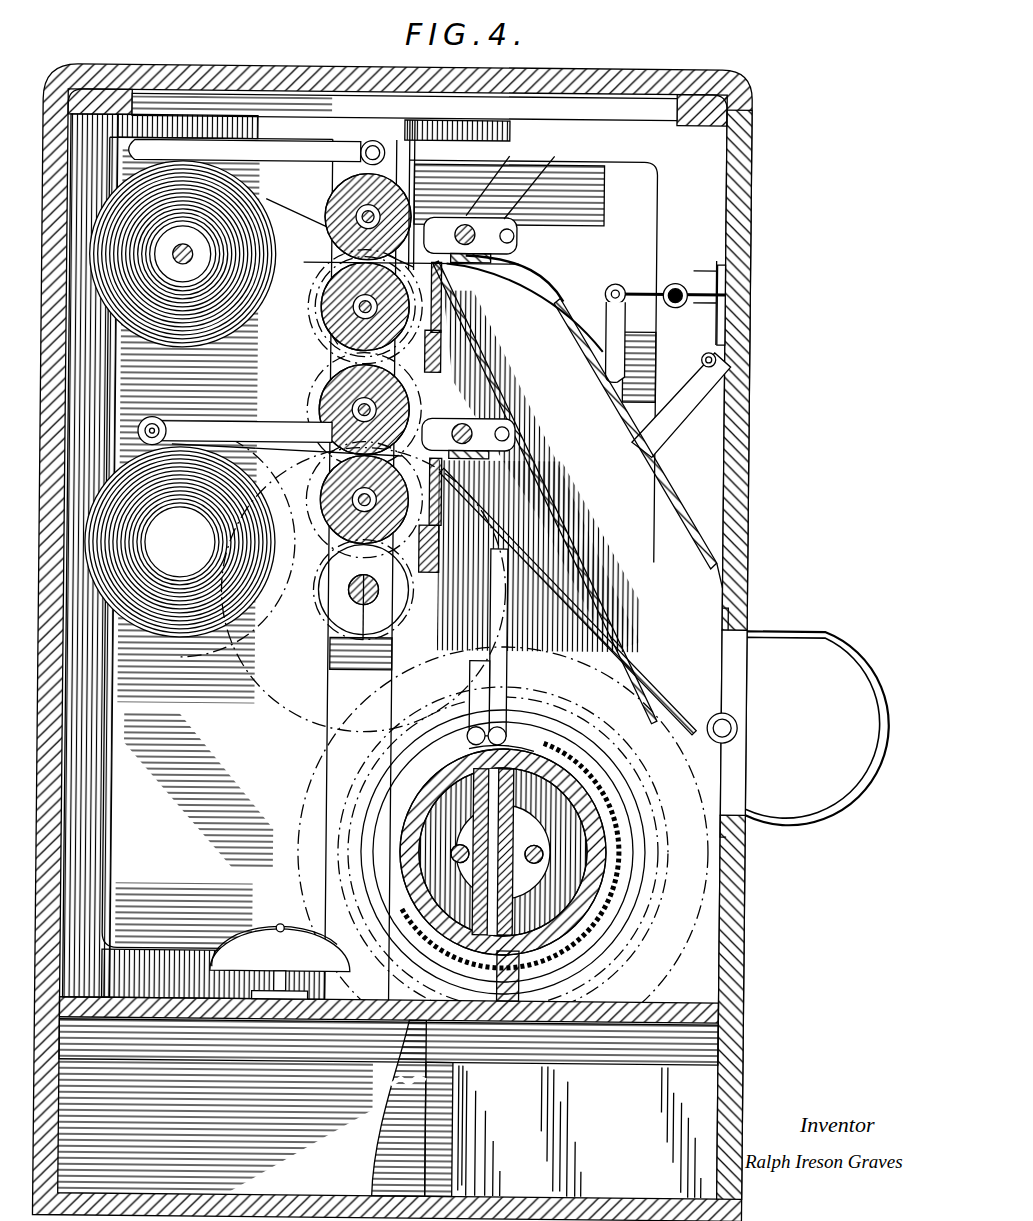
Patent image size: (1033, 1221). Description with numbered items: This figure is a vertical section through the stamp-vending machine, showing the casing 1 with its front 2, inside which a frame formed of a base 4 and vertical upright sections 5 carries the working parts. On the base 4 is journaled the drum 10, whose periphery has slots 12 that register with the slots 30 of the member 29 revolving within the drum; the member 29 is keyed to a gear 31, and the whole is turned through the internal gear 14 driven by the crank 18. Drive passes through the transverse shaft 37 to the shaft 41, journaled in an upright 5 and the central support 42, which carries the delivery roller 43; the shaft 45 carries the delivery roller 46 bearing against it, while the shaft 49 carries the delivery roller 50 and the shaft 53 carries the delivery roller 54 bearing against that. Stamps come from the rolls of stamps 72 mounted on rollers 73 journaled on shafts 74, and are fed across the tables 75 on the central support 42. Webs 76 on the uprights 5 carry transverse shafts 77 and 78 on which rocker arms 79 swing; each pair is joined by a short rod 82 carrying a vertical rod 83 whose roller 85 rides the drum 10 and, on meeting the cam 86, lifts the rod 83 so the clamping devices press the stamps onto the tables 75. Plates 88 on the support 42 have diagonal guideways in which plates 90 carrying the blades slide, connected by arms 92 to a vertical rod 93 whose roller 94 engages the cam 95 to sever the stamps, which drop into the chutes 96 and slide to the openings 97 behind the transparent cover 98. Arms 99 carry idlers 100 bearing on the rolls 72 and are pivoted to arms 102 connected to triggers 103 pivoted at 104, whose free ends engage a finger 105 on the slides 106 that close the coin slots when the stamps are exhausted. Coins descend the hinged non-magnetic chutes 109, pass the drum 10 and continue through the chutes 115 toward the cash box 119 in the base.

The casing 1 is at (100, 812).
The front 2 is at (745, 932).
The base 4 is at (722, 1002).
The vertical upright sections 5 is at (92, 858).
The drum 10 is at (422, 905).
The slots 12 is at (262, 500).
The internal gear 14 is at (620, 890).
The crank 18 is at (672, 775).
The member 29 is at (520, 824).
The slots 30 is at (535, 866).
The gear 31 is at (345, 920).
The transverse shaft 37 is at (348, 592).
The shaft 41 is at (322, 485).
The central support 42 is at (335, 690).
The delivery roller 43 is at (330, 527).
The shaft 45 is at (330, 436).
The delivery roller 46 is at (318, 395).
The shaft 49 is at (350, 312).
The delivery roller 50 is at (320, 332).
The shaft 53 is at (372, 160).
The delivery roller 54 is at (268, 240).
The rolls of stamps 72 is at (332, 283).
The rollers 73 is at (208, 258).
The shafts 74 is at (177, 398).
The tables 75 is at (485, 305).
The webs 76 is at (496, 175).
The transverse shaft 77 is at (538, 176).
The transverse shaft 78 is at (470, 410).
The rocker arms 79 is at (513, 238).
The short rod 82 is at (508, 240).
The vertical rod 83 is at (520, 455).
The roller 85 is at (540, 710).
The cam 86 is at (570, 722).
The plates 88 is at (450, 368).
The plates 90 is at (422, 535).
The arms 92 is at (480, 548).
The vertical rod 93 is at (418, 700).
The roller 94 is at (468, 742).
The cam 95 is at (440, 760).
The chutes 96 is at (660, 515).
The openings 97 is at (735, 680).
The transparent cover 98 is at (810, 822).
The arms 99 is at (282, 420).
The idlers 100 is at (165, 425).
The arms 102 is at (608, 285).
The triggers 103 is at (650, 285).
The pivot 104 is at (680, 285).
The finger 105 is at (715, 290).
The slides 106 is at (722, 300).
The chutes 109 is at (690, 420).
The chutes 115 is at (382, 1138).
The cash box 119 is at (580, 1132).